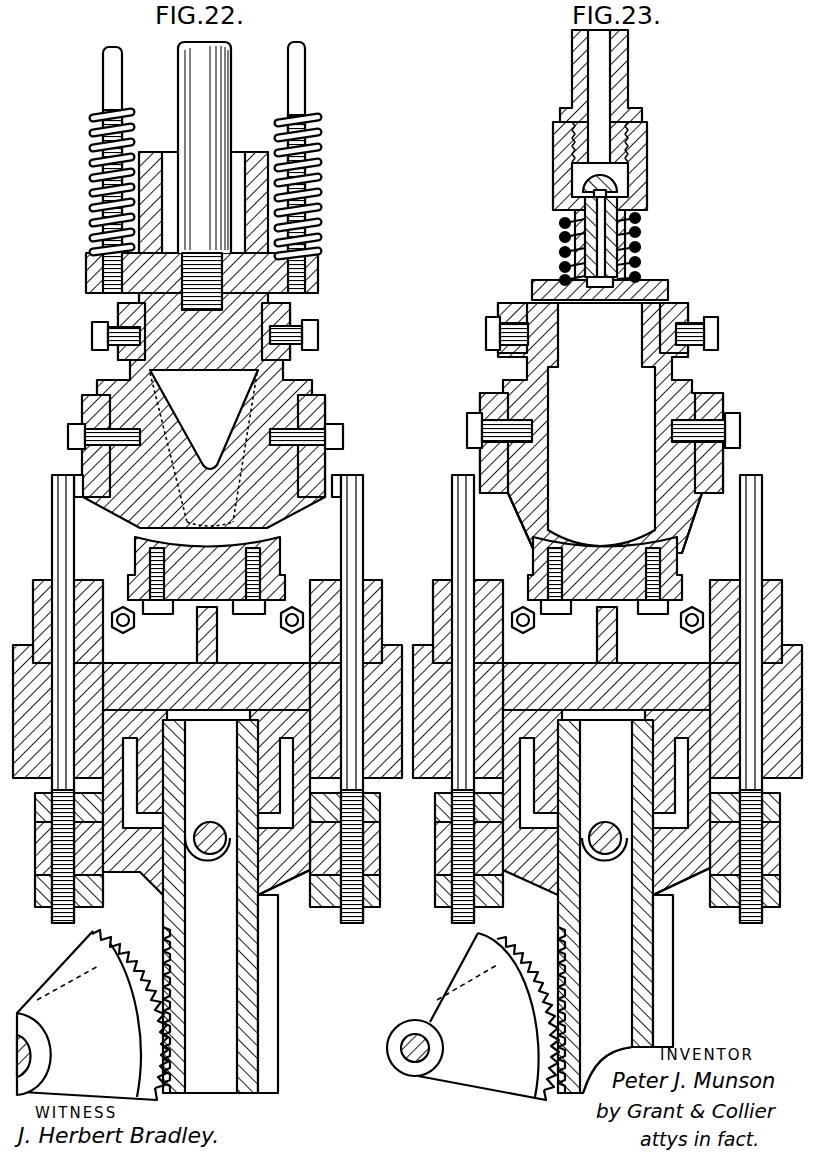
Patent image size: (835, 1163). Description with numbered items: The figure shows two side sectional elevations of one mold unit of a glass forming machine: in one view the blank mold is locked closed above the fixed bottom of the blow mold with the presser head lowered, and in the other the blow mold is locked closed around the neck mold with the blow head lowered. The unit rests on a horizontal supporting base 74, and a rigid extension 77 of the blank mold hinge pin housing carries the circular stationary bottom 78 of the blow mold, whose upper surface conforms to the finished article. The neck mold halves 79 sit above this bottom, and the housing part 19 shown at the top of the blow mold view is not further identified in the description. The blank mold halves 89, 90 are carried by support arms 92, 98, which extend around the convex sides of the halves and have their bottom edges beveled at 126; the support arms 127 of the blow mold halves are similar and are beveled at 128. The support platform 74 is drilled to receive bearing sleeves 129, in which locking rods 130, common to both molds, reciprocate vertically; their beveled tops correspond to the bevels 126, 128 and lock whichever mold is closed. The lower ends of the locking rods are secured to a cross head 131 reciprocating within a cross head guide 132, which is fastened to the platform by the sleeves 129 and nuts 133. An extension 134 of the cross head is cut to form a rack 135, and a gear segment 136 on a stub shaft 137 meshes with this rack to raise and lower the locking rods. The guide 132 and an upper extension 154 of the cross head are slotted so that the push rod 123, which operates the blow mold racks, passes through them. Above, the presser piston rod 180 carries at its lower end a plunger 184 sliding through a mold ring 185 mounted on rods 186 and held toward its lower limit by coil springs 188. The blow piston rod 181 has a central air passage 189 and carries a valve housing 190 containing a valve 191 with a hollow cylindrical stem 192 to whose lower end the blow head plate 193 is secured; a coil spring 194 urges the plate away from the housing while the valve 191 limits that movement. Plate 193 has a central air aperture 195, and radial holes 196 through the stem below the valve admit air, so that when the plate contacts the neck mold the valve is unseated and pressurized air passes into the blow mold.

In FIG. 23, the valve housing 19 is at (512, 315).
In FIG. 22, the horizontal supporting base 74 is at (245, 680).
In FIG. 23, the horizontal supporting base 74 is at (640, 680).
In FIG. 22, the rigid extension 77 is at (285, 582).
In FIG. 23, the rigid extension 77 is at (597, 612).
In FIG. 22, the bottom of the blow mold 78 is at (138, 556).
In FIG. 23, the bottom of the blow mold 78 is at (533, 560).
In FIG. 22, the neck mold halves 79 is at (92, 312).
In FIG. 23, the neck mold halves 79 is at (690, 310).
In FIG. 22, the blank mold half 89 is at (110, 405).
In FIG. 22, the blank mold half 90 is at (292, 408).
In FIG. 22, the support arm 92 is at (325, 470).
In FIG. 22, the support arm 98 is at (82, 463).
In FIG. 22, the push rod 123 is at (213, 826).
In FIG. 23, the push rod 123 is at (607, 826).
In FIG. 22, the bevel 126 is at (78, 488).
In FIG. 23, the support arms 127 is at (483, 405).
In FIG. 23, the bevel 128 is at (472, 498).
In FIG. 22, the bearing sleeves 129 is at (125, 632).
In FIG. 23, the bearing sleeves 129 is at (447, 632).
In FIG. 22, the locking rods 130 is at (52, 555).
In FIG. 23, the locking rods 130 is at (452, 552).
In FIG. 22, the cross head 131 is at (280, 905).
In FIG. 23, the cross head 131 is at (680, 900).
In FIG. 22, the cross head guide 132 is at (268, 762).
In FIG. 23, the cross head guide 132 is at (658, 762).
In FIG. 22, the nuts 133 is at (378, 790).
In FIG. 23, the nuts 133 is at (607, 776).
In FIG. 22, the extension of the cross head 134 is at (245, 1000).
In FIG. 23, the extension of the cross head 134 is at (640, 1000).
In FIG. 22, the rack 135 is at (175, 970).
In FIG. 23, the rack 135 is at (498, 937).
In FIG. 22, the gear segment 136 is at (105, 963).
In FIG. 23, the gear segment 136 is at (545, 985).
In FIG. 22, the shaft 137 is at (35, 1053).
In FIG. 23, the shaft 137 is at (386, 1050).
In FIG. 22, the upper extension of the cross head 154 is at (212, 860).
In FIG. 23, the upper extension of the cross head 154 is at (606, 860).
In FIG. 22, the piston rod 180 is at (228, 118).
In FIG. 23, the piston rod 181 is at (628, 72).
In FIG. 22, the plunger 184 is at (222, 392).
In FIG. 22, the mold ring 185 is at (320, 272).
In FIG. 22, the rods 186 is at (103, 88).
In FIG. 22, the coil springs 188 is at (97, 190).
In FIG. 23, the central air passage 189 is at (598, 100).
In FIG. 23, the valve housing 190 is at (648, 155).
In FIG. 23, the valve 191 is at (612, 188).
In FIG. 23, the valve stem 192 is at (617, 206).
In FIG. 23, the blow head plate 193 is at (660, 283).
In FIG. 23, the coil spring 194 is at (561, 255).
In FIG. 23, the central air aperture 195 is at (601, 424).
In FIG. 23, the radial holes 196 is at (598, 193).